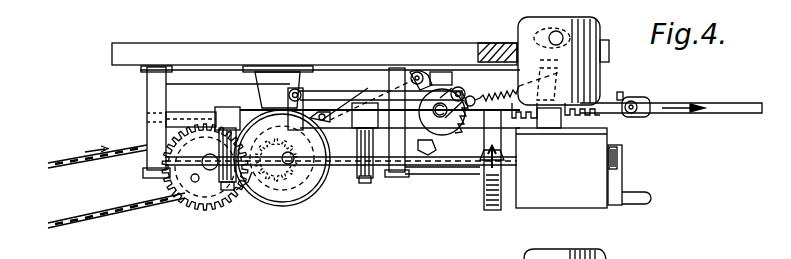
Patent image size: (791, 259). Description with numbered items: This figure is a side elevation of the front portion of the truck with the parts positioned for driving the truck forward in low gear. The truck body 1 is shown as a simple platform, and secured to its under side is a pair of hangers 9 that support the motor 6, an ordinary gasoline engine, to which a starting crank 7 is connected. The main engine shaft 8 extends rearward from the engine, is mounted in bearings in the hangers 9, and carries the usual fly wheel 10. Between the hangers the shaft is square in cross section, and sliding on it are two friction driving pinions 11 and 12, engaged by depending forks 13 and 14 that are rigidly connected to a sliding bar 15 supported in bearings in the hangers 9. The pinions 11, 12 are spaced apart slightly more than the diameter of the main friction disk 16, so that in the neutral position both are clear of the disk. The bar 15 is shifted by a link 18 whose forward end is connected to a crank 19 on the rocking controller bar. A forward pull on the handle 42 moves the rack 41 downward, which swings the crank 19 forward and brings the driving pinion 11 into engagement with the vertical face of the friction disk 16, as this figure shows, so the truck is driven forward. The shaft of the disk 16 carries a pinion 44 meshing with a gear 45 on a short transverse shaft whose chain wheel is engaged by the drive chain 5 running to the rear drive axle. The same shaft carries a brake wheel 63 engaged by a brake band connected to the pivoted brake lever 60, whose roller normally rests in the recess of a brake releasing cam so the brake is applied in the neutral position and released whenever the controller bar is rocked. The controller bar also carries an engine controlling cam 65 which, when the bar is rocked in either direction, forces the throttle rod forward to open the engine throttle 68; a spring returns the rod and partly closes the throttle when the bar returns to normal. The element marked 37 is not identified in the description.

The truck body 1 is at (180, 47).
The drive chain 5 is at (62, 160).
The motor 6 is at (543, 188).
The starting crank 7 is at (624, 170).
The main engine shaft 8 is at (432, 168).
The hangers 9 is at (146, 89).
The fly wheel 10 is at (487, 196).
The friction driving pinion 11 is at (236, 192).
The friction driving pinion 12 is at (362, 184).
The depending fork 13 is at (227, 108).
The depending fork 14 is at (367, 93).
The sliding bar 15 is at (181, 112).
The main friction disk 16 is at (290, 202).
The link 18 is at (323, 92).
The crank 19 is at (452, 90).
The detent 37 is at (422, 150).
The rack 41 is at (462, 161).
The handle 42 is at (713, 103).
The pinion 44 is at (274, 168).
The gear 45 is at (205, 210).
The brake lever 60 is at (352, 140).
The brake wheel 63 is at (276, 125).
The engine controlling cam 65 is at (415, 74).
The engine throttle 68 is at (604, 79).